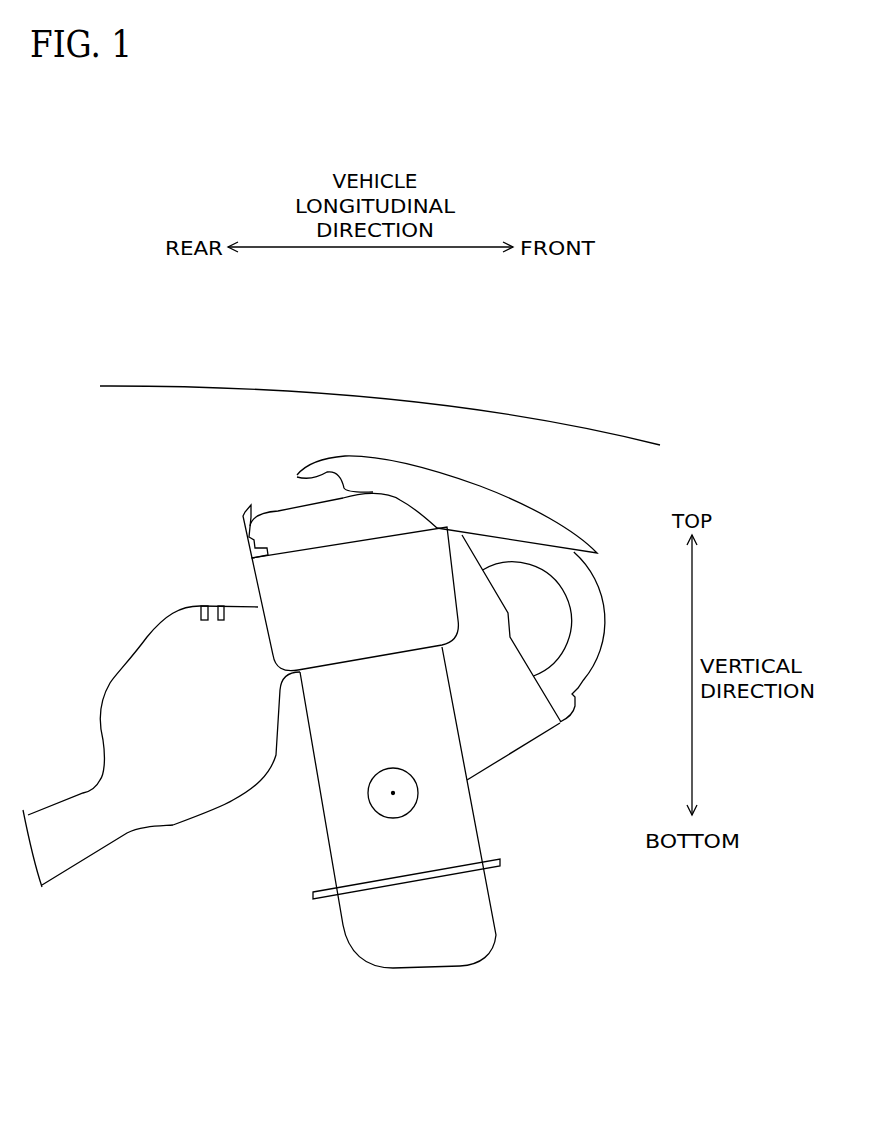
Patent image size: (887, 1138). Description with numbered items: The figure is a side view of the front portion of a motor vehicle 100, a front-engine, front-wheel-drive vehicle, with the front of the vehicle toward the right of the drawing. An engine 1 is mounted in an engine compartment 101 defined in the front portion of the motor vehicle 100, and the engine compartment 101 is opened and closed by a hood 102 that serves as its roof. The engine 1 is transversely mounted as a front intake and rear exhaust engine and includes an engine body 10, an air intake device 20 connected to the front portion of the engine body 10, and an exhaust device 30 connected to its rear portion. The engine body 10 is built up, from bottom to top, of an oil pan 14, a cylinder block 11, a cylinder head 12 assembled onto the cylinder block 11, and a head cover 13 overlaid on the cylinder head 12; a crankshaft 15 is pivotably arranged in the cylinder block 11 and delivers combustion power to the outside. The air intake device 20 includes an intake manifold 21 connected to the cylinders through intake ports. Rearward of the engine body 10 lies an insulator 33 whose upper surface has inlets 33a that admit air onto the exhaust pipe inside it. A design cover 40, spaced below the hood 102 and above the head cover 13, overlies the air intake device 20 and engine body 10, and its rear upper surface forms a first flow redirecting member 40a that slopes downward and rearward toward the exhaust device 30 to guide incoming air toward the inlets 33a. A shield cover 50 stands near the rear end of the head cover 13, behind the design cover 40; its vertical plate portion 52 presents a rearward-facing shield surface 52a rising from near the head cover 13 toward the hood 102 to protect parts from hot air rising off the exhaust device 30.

The motor vehicle 100 is at (95, 370).
The engine compartment 101 is at (27, 504).
The hood 102 is at (378, 398).
The engine 1 is at (147, 475).
The engine body 10 is at (496, 897).
The cylinder block 11 is at (473, 812).
The cylinder head 12 is at (253, 577).
The head cover 13 is at (343, 531).
The oil pan 14 is at (333, 930).
The crankshaft 15 is at (407, 816).
The air intake device 20 is at (547, 732).
The intake manifold 21 is at (604, 643).
The exhaust device 30 is at (107, 692).
The insulator 33 is at (157, 827).
The inlets 33a is at (204, 620).
The design cover 40 is at (518, 495).
The first flow redirecting member 40a is at (303, 470).
The shield cover 50 is at (247, 503).
The vertical plate portion 52 is at (191, 531).
The shield surface 52a is at (238, 529).